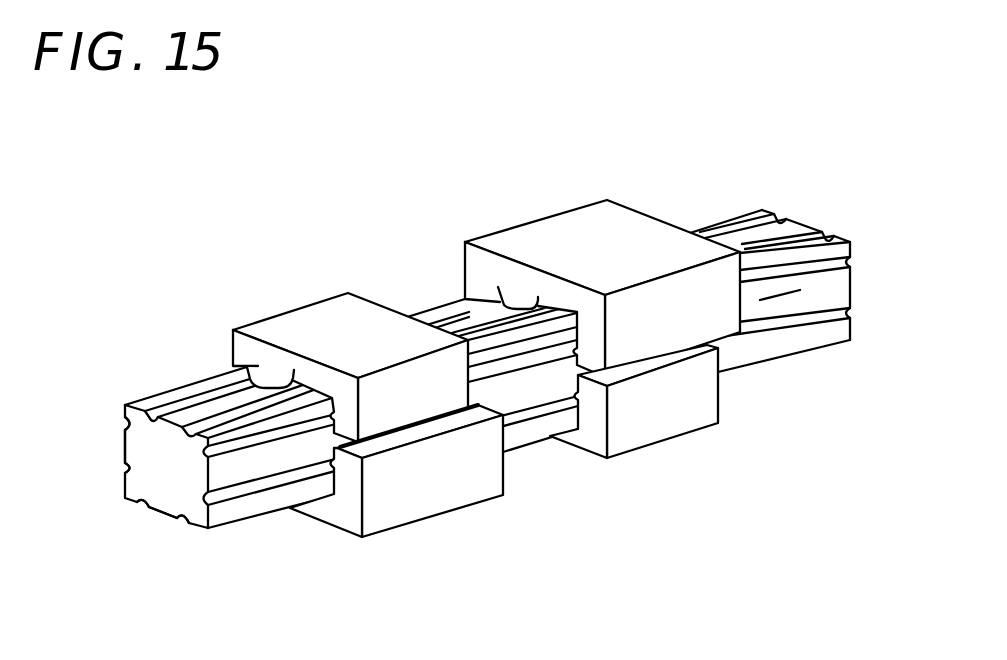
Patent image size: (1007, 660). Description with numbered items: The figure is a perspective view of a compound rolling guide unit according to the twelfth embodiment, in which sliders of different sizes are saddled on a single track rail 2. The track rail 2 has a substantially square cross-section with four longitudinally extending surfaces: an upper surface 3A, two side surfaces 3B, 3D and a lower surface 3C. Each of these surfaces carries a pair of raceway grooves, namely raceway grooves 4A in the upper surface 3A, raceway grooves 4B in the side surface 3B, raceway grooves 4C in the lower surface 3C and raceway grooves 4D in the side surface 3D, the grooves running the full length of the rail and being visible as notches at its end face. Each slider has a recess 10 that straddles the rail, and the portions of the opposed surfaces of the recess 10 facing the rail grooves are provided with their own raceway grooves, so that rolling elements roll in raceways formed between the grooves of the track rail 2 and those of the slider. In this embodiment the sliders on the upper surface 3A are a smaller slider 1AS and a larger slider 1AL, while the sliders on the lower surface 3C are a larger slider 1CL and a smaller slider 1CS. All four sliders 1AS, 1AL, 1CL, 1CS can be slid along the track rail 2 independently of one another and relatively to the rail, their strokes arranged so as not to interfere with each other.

The track rail 2 is at (452, 357).
The upper surface 3A is at (756, 237).
The side surface 3B is at (795, 305).
The lower surface 3C is at (163, 513).
The side surface 3D is at (122, 453).
The raceway grooves 4A is at (500, 296).
The raceway grooves 4B is at (260, 485).
The raceway grooves 4C is at (147, 507).
The raceway grooves 4D is at (123, 421).
The recess 10 is at (246, 370).
The slider 1AS is at (341, 316).
The slider 1AL is at (580, 235).
The slider 1CL is at (438, 490).
The slider 1CS is at (688, 405).